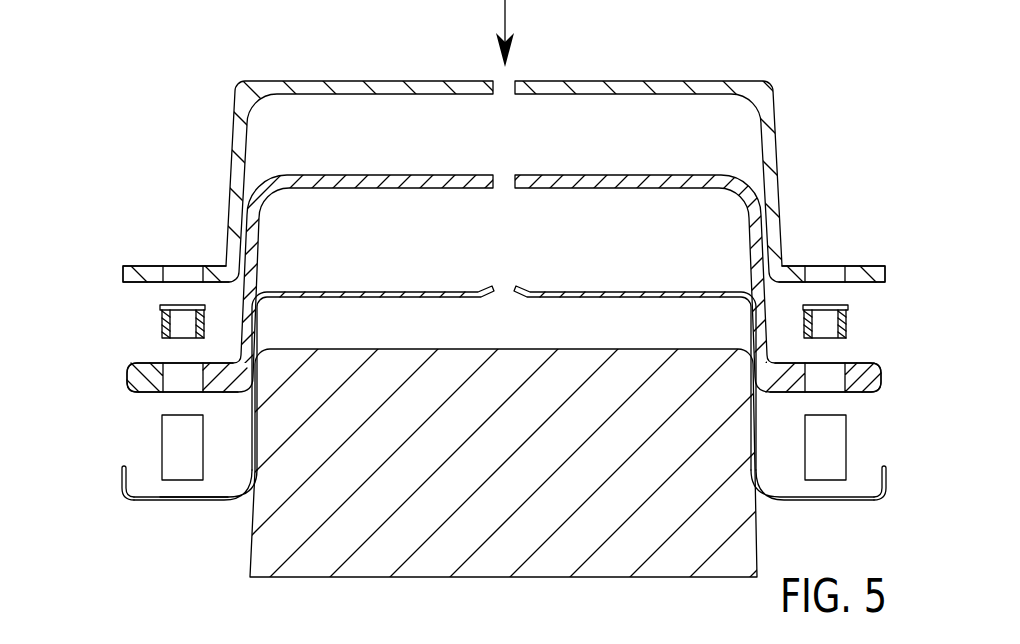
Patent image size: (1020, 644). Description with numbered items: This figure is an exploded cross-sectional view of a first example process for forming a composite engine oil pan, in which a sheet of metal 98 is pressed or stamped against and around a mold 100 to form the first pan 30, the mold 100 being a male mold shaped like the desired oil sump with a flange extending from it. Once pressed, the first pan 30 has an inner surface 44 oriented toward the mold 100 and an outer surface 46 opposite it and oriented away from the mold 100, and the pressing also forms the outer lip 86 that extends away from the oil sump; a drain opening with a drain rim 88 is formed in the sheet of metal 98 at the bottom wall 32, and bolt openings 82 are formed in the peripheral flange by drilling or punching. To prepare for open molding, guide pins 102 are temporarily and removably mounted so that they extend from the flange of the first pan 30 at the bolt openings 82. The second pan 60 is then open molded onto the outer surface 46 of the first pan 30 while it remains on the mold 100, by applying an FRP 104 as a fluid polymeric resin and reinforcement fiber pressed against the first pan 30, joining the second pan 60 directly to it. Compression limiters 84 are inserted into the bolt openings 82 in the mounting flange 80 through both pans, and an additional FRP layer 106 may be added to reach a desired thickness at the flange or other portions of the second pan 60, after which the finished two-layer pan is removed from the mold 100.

The first pan 30 is at (373, 340).
The sheet of metal 98 is at (357, 282).
The bottom wall 32 is at (635, 337).
The inner surface 44 is at (583, 290).
The outer surface 46 is at (635, 337).
The drain rim 88 is at (496, 287).
The second pan 60 is at (57, 272).
The additional FRP layer 106 is at (122, 273).
The compression limiters 84 is at (160, 323).
The FRP 104 is at (127, 378).
The bolt openings 82 is at (198, 380).
The guide pins 102 is at (162, 448).
The outer lip 86 is at (120, 477).
The mounting flange 80 is at (478, 524).
The mold 100 is at (243, 564).